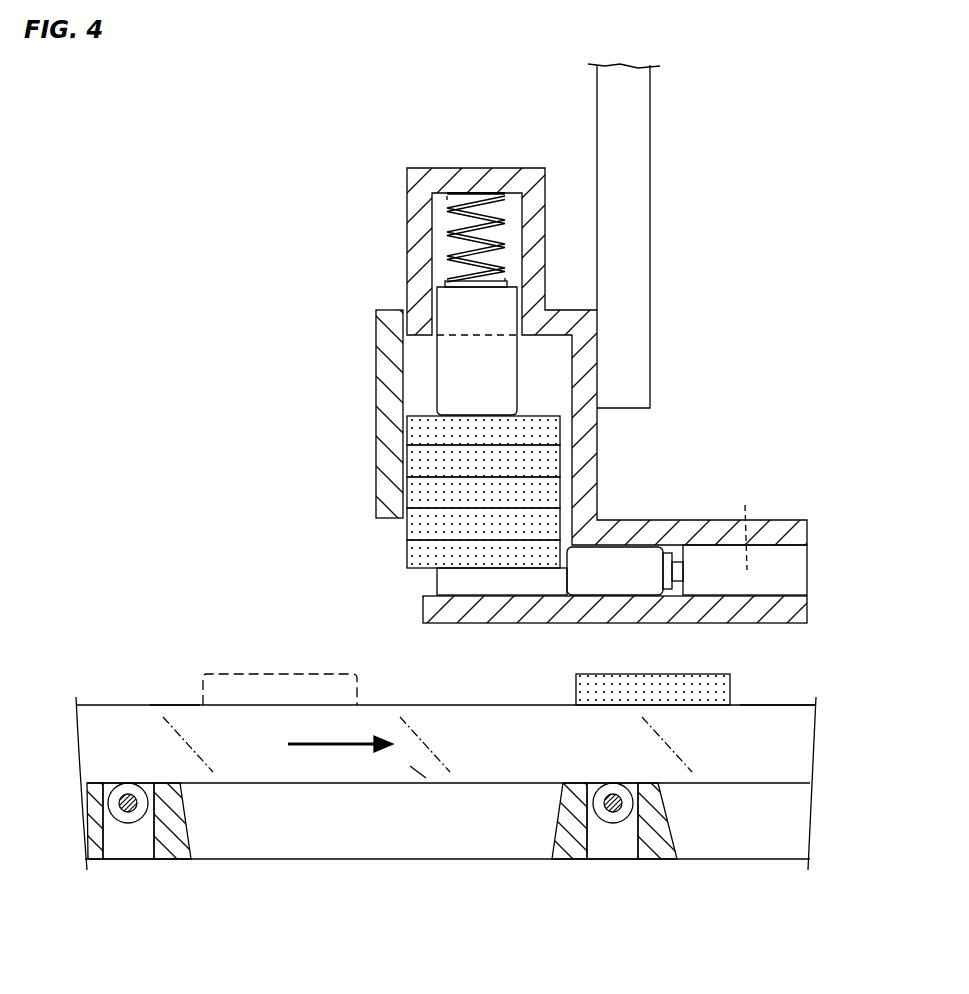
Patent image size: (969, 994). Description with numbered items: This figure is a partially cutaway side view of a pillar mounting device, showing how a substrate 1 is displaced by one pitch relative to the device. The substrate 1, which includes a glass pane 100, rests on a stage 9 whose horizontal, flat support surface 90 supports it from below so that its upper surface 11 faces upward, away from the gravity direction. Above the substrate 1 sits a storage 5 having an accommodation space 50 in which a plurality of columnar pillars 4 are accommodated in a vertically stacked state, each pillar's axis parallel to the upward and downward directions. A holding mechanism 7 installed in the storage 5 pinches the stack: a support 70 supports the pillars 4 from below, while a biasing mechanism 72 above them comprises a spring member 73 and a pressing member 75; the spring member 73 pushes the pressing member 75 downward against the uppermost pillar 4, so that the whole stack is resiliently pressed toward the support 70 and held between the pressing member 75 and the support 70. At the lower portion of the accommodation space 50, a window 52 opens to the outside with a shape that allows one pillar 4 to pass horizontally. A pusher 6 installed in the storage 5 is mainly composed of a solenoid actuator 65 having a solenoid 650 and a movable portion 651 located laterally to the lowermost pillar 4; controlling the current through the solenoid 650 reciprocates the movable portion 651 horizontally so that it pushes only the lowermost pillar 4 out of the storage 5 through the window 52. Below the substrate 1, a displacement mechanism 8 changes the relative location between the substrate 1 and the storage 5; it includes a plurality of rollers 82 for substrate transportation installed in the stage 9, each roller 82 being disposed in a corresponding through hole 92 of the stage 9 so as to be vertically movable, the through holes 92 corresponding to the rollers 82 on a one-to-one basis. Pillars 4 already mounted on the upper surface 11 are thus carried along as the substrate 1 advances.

The substrate 1 is at (125, 703).
The pillar 4 is at (417, 430).
The storage 5 is at (583, 447).
The pusher 6 is at (710, 538).
The holding mechanism 7 is at (436, 204).
The displacement mechanism 8 is at (641, 885).
The stage 9 is at (233, 862).
The upper surface 11 is at (177, 703).
The accommodation space 50 is at (420, 368).
The window 52 is at (392, 558).
The solenoid actuator 65 is at (788, 560).
The support 70 is at (503, 585).
The biasing mechanism 72 is at (478, 203).
The spring member 73 is at (451, 238).
The pressing member 75 is at (453, 305).
The roller 82 is at (135, 787).
The support surface 90 is at (416, 774).
The through hole 92 is at (127, 846).
The glass pane 100 is at (775, 718).
The solenoid 650 is at (750, 525).
The movable portion 651 is at (610, 582).